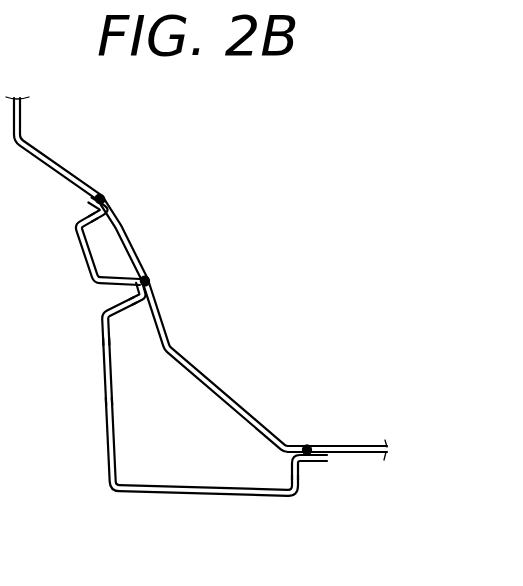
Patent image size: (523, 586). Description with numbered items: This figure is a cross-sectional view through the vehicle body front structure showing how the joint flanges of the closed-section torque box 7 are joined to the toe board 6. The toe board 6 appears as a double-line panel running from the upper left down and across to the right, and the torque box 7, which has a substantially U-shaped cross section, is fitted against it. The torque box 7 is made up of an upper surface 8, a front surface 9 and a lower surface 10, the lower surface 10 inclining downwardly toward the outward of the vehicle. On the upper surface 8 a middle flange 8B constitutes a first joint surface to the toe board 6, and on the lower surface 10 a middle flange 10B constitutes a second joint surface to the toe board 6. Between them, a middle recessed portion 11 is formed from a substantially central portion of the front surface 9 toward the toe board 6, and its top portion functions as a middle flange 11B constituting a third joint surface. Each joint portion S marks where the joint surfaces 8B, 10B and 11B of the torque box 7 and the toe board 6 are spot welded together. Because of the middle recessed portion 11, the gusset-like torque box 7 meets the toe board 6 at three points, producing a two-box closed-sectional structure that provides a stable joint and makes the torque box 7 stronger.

The toe board 6 is at (202, 382).
The torque box 7 is at (222, 383).
The upper surface 8 is at (82, 194).
The middle flange 8B is at (92, 200).
The front surface 9 is at (106, 352).
The lower surface 10 is at (204, 490).
The middle flange 10B is at (322, 460).
The middle recessed portion 11 is at (118, 275).
The middle flange 11B is at (138, 283).
The joint portion S is at (106, 197).